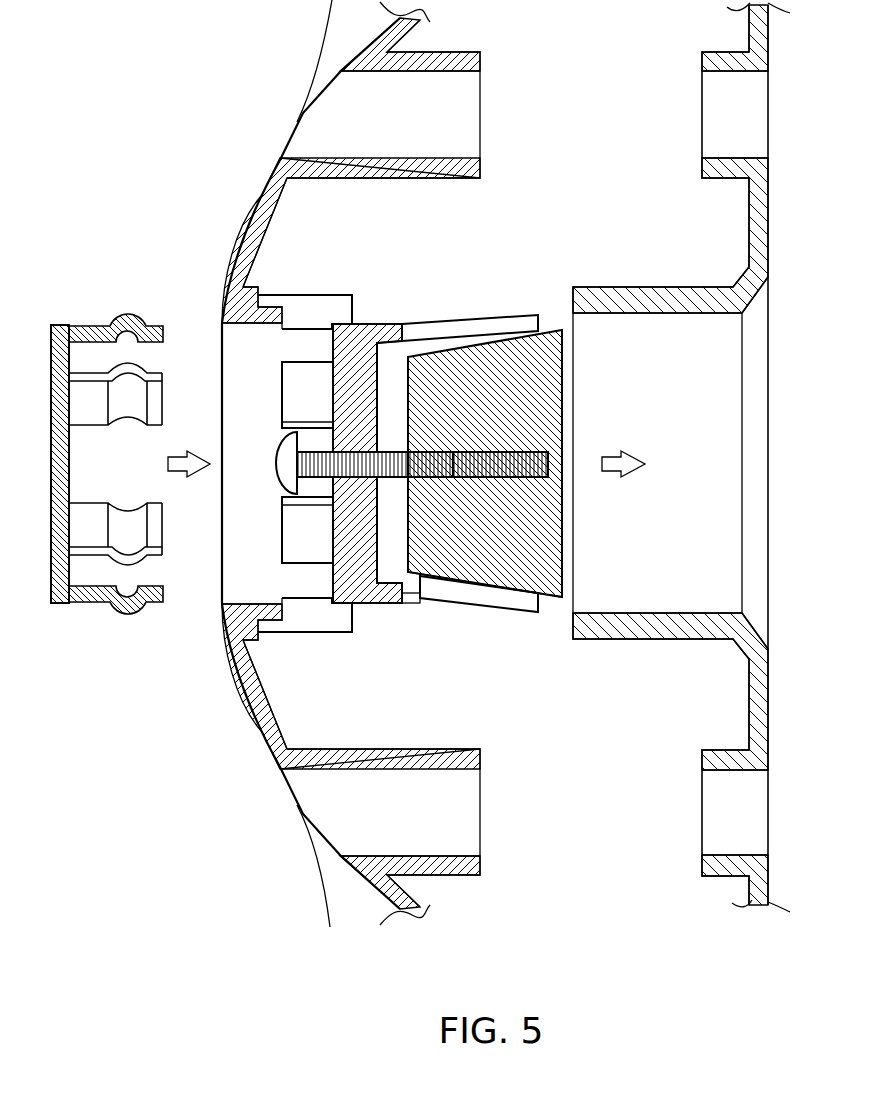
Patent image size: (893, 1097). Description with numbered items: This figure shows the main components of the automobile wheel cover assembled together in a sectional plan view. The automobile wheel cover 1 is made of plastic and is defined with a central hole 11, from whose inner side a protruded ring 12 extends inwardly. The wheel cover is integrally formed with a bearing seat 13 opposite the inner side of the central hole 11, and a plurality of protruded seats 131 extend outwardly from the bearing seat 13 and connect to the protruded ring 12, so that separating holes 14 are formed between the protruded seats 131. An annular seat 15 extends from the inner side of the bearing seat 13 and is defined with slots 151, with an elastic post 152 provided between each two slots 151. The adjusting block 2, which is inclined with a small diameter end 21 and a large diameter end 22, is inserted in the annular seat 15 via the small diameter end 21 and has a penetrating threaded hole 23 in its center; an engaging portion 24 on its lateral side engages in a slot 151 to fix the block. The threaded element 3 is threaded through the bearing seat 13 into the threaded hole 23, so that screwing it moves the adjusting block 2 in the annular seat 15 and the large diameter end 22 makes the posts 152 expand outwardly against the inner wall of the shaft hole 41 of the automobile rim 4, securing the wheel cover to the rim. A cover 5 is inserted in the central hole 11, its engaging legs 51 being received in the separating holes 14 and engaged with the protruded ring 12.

The automobile wheel cover 1 is at (243, 224).
The central hole 11 is at (240, 567).
The protruded ring 12 is at (278, 290).
The bearing seat 13 is at (323, 594).
The protruded seats 131 is at (300, 310).
The separating holes 14 is at (314, 378).
The annular seat 15 is at (390, 323).
The slots 151 is at (470, 330).
The elastic posts 152 is at (437, 323).
The adjusting block 2 is at (563, 368).
The small diameter end 21 is at (405, 537).
The large diameter end 22 is at (563, 533).
The threaded hole 23 is at (537, 467).
The engaging portion 24 is at (448, 590).
The threaded element 3 is at (277, 458).
The automobile rim 4 is at (618, 287).
The shaft hole 41 is at (657, 578).
The cover 5 is at (60, 603).
The engaging legs 51 is at (115, 317).